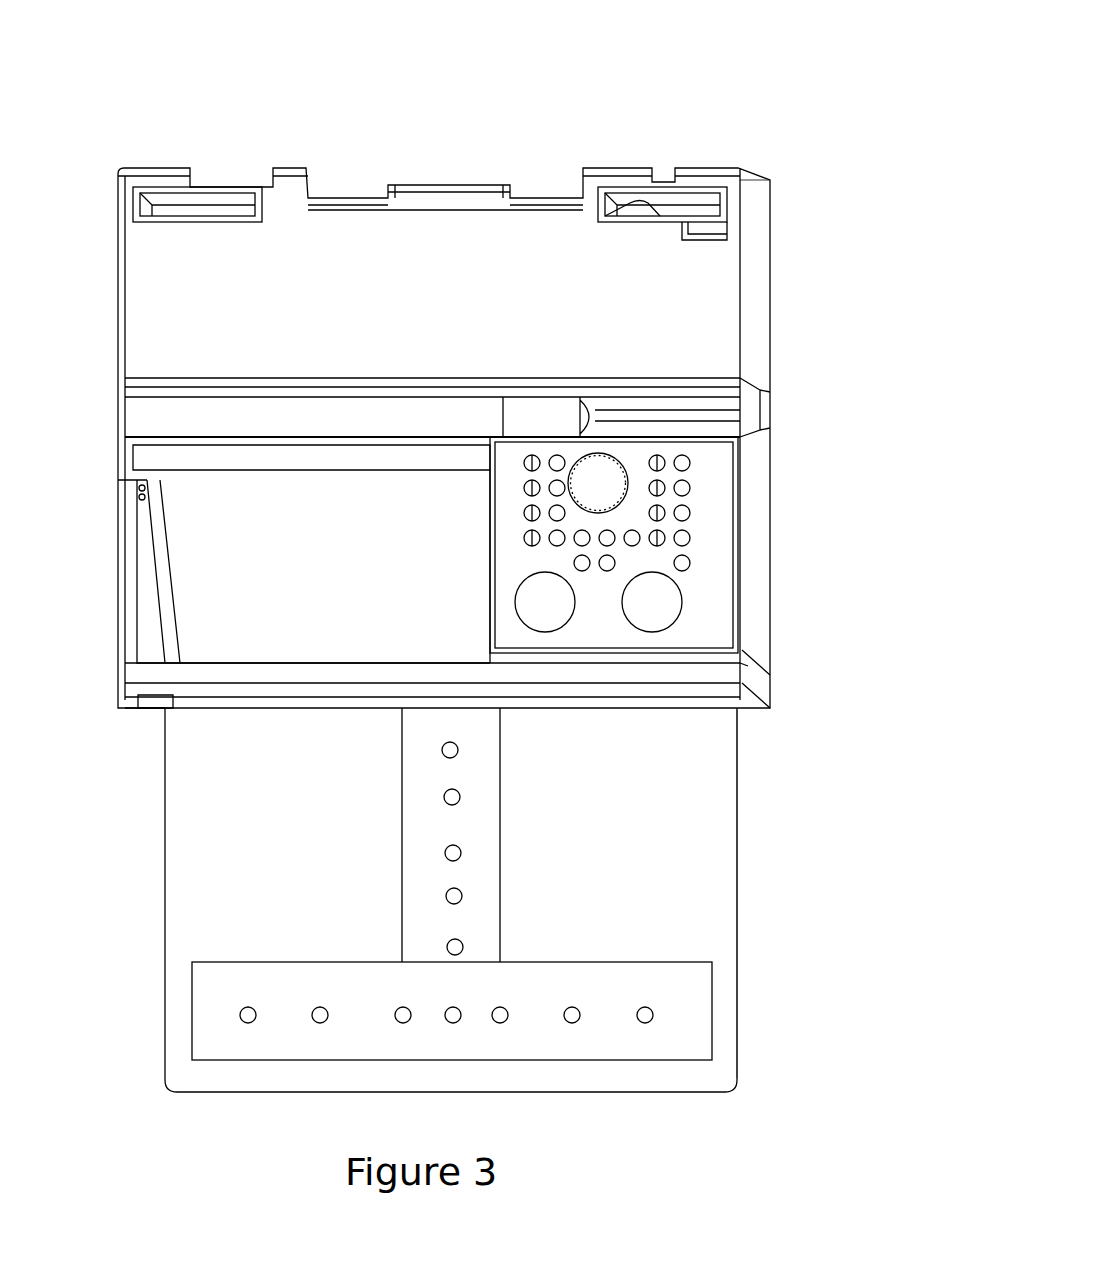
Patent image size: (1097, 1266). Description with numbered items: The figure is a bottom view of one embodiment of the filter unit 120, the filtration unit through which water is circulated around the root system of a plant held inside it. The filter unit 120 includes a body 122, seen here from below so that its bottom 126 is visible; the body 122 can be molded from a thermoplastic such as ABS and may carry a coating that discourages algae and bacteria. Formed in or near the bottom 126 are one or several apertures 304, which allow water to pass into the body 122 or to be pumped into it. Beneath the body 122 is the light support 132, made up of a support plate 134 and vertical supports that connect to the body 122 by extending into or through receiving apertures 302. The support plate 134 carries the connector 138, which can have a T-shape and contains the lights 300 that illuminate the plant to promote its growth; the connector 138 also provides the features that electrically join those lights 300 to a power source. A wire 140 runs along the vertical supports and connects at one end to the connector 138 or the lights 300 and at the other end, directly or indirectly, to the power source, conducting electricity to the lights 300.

The filter unit 120 is at (808, 48).
The body 122 is at (118, 325).
The receiving apertures 302 is at (211, 196).
The wire 140 is at (128, 416).
The bottom 126 is at (725, 520).
The apertures 304 is at (690, 566).
The light support 132 is at (165, 745).
The support plate 134 is at (737, 830).
The connector 138 is at (500, 850).
The lights 300 is at (577, 1005).